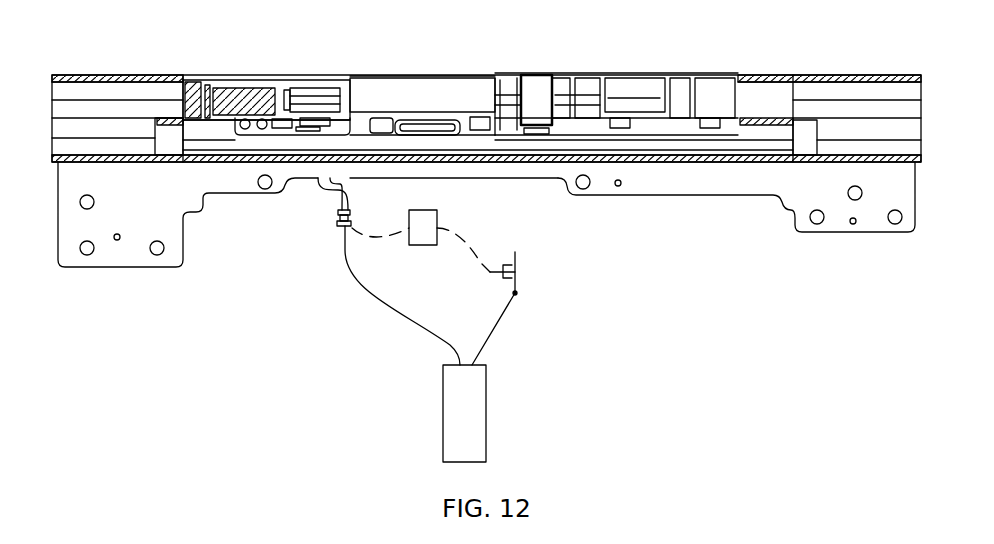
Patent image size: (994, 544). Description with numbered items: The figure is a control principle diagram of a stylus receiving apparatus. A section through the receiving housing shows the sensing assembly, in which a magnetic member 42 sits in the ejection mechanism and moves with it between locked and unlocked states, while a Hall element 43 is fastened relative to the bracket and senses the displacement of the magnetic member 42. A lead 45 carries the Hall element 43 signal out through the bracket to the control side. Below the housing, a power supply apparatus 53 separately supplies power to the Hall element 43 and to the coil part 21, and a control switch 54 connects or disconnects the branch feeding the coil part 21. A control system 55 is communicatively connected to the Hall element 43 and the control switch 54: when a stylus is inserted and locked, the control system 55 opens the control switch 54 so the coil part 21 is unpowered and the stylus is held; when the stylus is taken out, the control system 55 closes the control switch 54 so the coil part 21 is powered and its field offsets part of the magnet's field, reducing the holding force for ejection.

The coil part 21 is at (530, 262).
The magnetic member 42 is at (294, 75).
The Hall element 43 is at (273, 118).
The lead 45 is at (338, 195).
The power supply apparatus 53 is at (478, 423).
The control switch 54 is at (503, 262).
The control system 55 is at (428, 212).